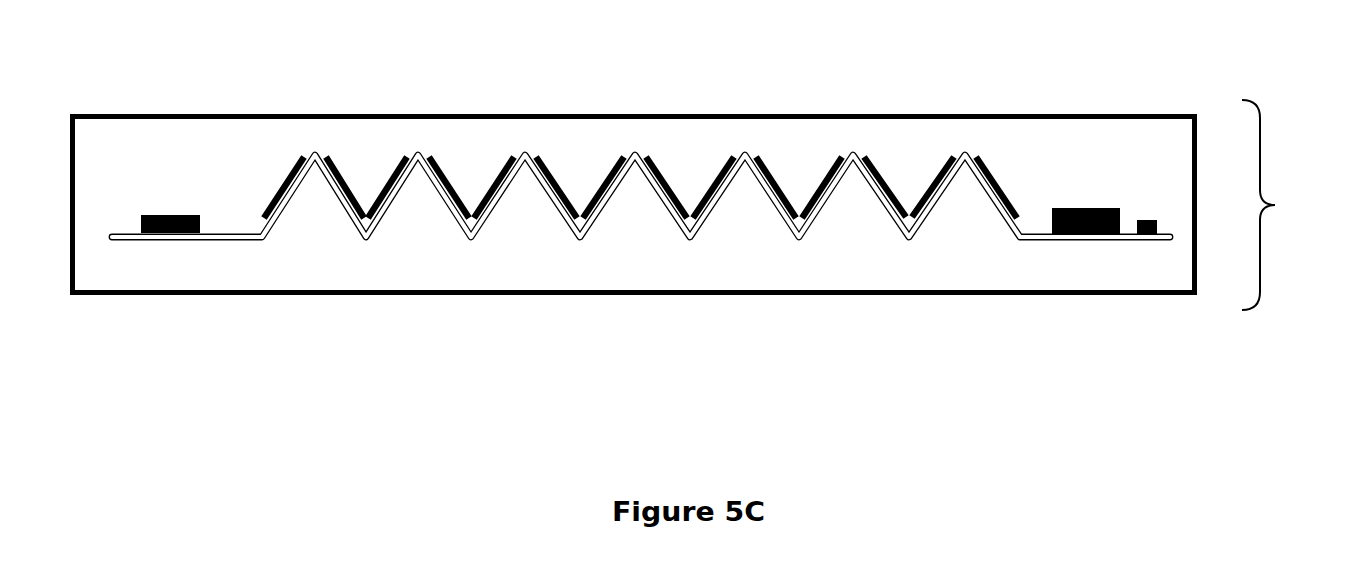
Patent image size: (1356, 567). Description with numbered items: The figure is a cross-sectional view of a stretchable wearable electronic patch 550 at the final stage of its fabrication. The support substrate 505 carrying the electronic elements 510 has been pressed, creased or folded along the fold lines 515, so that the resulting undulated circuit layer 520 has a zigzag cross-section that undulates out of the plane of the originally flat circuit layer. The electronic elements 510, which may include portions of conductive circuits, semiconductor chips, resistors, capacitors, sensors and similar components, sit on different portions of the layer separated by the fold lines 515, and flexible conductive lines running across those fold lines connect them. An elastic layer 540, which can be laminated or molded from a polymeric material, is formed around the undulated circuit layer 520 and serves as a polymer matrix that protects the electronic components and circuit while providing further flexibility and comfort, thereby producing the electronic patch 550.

The support substrate 505 is at (222, 242).
The electronic elements 510 is at (997, 180).
The fold lines 515 is at (313, 152).
The undulated circuit layer 520 is at (1105, 243).
The elastic layer 540 is at (196, 174).
The electronic patch 550 is at (1289, 205).